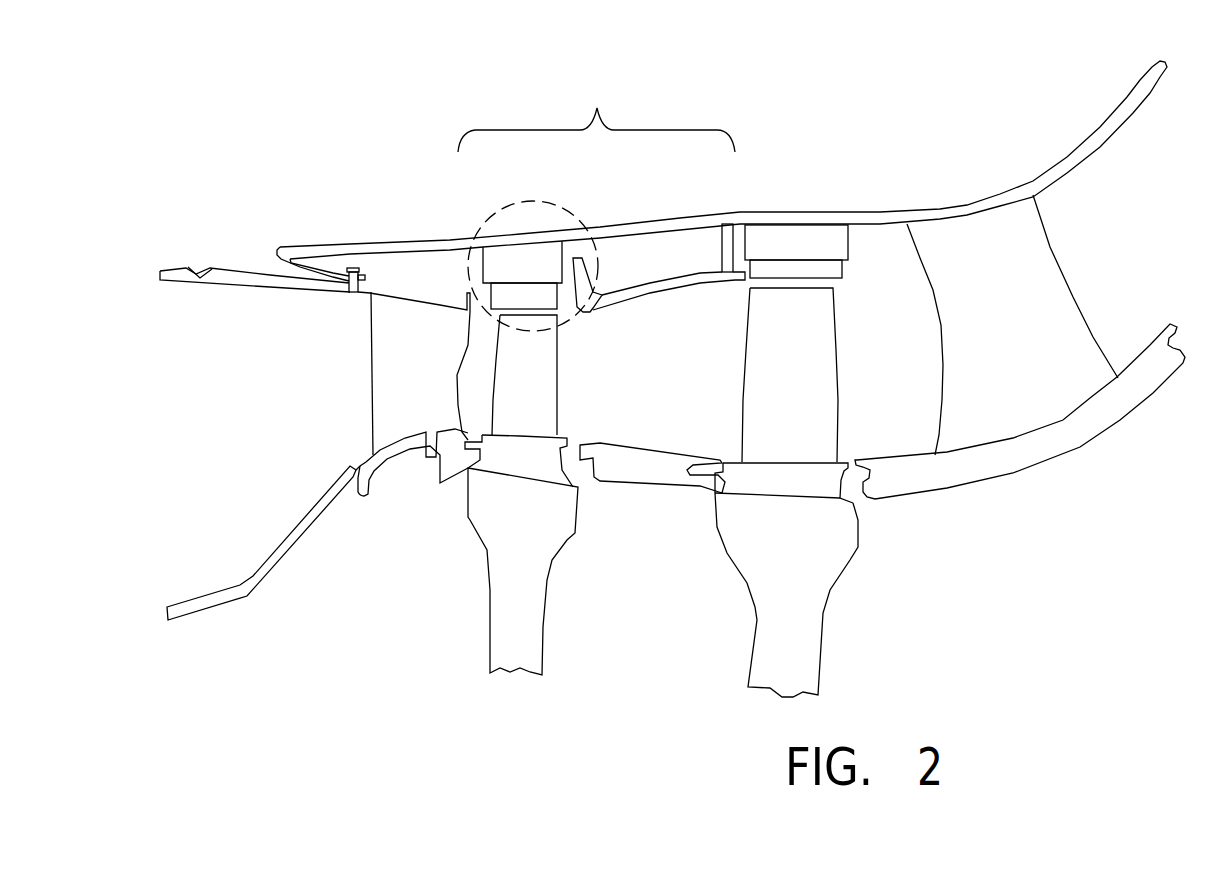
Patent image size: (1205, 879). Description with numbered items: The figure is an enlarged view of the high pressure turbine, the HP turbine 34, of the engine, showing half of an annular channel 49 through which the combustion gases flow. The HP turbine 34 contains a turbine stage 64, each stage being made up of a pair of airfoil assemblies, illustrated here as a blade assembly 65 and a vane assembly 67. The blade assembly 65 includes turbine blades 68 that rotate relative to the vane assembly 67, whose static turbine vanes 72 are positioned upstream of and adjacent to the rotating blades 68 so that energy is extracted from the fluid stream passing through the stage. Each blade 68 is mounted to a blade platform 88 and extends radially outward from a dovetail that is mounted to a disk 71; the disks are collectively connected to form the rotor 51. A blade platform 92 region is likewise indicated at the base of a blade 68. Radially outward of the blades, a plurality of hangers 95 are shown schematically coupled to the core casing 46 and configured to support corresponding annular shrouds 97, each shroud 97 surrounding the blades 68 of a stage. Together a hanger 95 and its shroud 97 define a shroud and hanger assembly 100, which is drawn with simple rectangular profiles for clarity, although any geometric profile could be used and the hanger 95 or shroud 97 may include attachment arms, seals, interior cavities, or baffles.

The HP turbine 34 is at (767, 150).
The core casing 46 is at (881, 208).
The annular channel 49 is at (295, 405).
The rotor 51 is at (475, 586).
The turbine stage 64 is at (597, 108).
The blade assembly 65 is at (540, 492).
The vane assembly 67 is at (650, 430).
The turbine blade 68 is at (540, 383).
The disk 71 is at (508, 654).
The static turbine vane 72 is at (430, 378).
The blade platform 88 is at (513, 430).
The blade platform 92 is at (522, 457).
The hanger 95 is at (527, 257).
The shroud 97 is at (512, 288).
The shroud and hanger assembly 100 is at (567, 210).